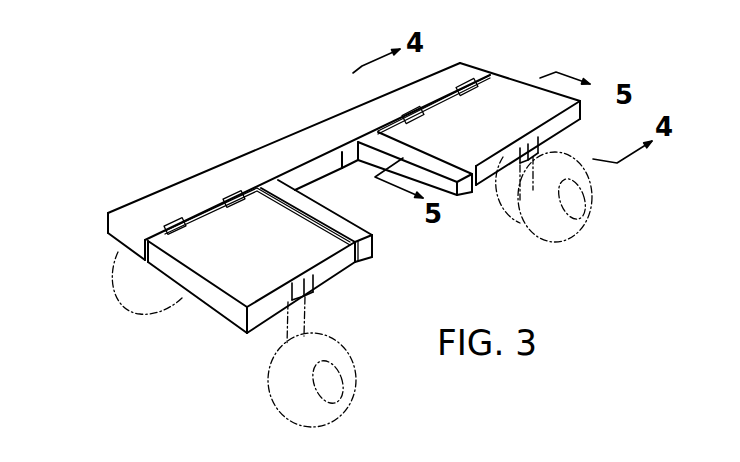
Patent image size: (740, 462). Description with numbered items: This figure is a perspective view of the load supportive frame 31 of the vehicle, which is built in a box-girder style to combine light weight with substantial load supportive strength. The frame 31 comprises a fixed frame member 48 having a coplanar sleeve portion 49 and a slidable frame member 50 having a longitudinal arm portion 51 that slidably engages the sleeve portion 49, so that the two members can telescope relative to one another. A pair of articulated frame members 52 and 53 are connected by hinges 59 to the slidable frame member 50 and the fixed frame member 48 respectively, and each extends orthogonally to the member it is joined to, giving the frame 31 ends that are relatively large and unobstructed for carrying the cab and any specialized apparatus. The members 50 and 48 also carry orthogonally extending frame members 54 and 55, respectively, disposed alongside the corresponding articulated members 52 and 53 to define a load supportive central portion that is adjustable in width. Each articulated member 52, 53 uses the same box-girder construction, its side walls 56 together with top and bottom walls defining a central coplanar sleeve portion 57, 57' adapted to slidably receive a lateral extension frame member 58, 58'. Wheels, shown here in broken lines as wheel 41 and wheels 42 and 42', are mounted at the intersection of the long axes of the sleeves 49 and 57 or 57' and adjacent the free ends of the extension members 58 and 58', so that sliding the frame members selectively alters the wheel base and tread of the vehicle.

The frame 31 is at (546, 37).
The coil (phantom) 41 is at (572, 236).
The coil (phantom) 42 is at (337, 382).
The coil (phantom) 42' is at (119, 292).
The fixed frame member 48 is at (288, 161).
The coplanar sleeve portion 49 is at (347, 103).
The slidable frame member 50 is at (140, 197).
The longitudinal arm portion 51 is at (184, 188).
The articulated frame member 52 is at (263, 310).
The articulated frame member 53 is at (541, 155).
The orthogonally extending frame member 54 is at (376, 246).
The orthogonally extending frame member 55 is at (467, 193).
The side walls 56 is at (583, 106).
The central coplanar sleeve portion 57 is at (507, 185).
The central coplanar sleeve portion 57' is at (265, 327).
The lateral extension frame member 58 is at (517, 211).
The lateral extension frame member 58' is at (333, 316).
The hinges 59 is at (230, 194).